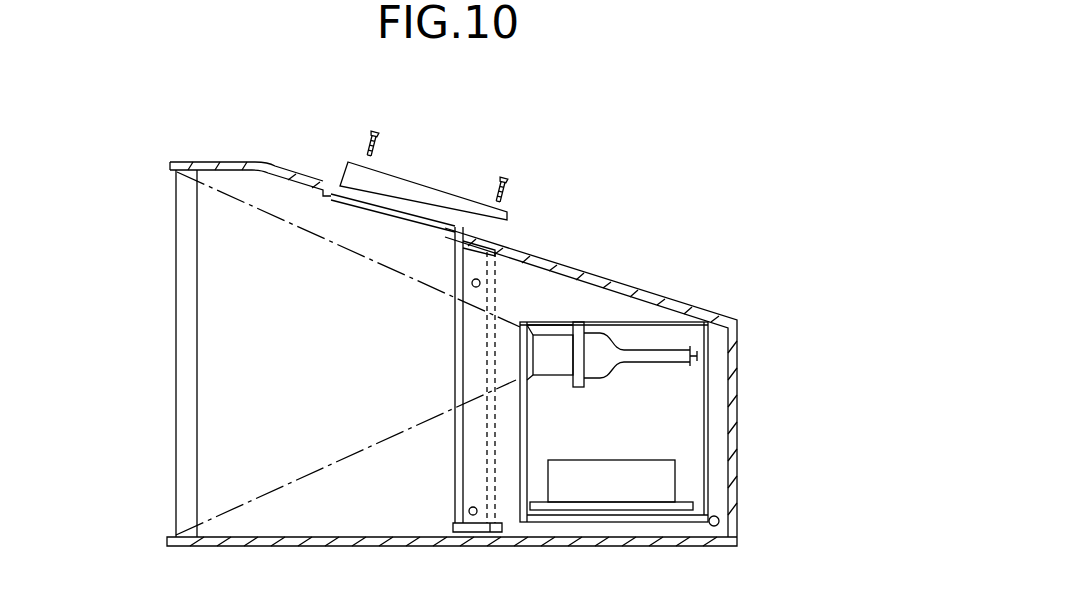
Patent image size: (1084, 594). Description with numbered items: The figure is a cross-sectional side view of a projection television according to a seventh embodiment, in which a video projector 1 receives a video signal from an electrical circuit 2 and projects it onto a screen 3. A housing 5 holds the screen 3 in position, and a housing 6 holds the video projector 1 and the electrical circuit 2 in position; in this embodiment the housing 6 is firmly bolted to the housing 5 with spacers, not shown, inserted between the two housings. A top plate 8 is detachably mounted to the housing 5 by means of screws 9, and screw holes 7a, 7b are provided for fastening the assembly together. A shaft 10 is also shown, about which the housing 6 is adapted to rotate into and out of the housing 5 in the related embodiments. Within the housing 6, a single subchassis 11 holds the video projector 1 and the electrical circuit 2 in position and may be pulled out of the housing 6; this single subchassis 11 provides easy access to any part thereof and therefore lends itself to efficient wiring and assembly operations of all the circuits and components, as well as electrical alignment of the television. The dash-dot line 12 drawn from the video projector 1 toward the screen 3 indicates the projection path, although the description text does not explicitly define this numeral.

The video projector 1 is at (600, 380).
The electrical circuit 2 is at (662, 462).
The screen 3 is at (175, 333).
The housing 5 is at (220, 161).
The housing 6 is at (739, 378).
The screw hole 7a is at (719, 521).
The screw hole 7b is at (481, 283).
The top plate 8 is at (420, 184).
The screw 9 is at (504, 176).
The shaft 10 is at (468, 511).
The subchassis 11 is at (625, 321).
The optical axis 12 is at (346, 249).